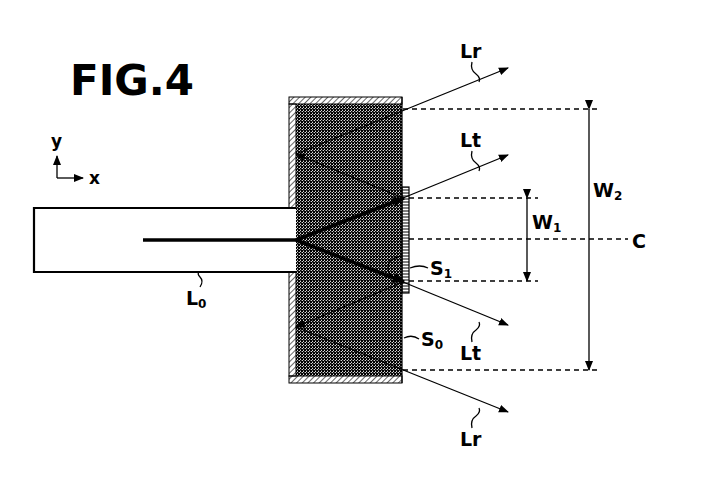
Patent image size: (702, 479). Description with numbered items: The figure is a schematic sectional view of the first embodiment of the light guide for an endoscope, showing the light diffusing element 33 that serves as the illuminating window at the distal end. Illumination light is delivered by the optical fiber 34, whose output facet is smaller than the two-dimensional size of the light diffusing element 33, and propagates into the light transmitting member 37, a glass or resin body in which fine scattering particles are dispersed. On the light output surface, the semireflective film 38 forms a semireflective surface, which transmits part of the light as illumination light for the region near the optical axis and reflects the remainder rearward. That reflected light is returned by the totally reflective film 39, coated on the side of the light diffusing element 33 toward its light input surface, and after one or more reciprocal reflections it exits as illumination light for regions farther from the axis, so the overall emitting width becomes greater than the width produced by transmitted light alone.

The light diffusing element 33 is at (316, 389).
The optical fiber 34 is at (77, 272).
The light transmitting member 37 is at (305, 358).
The semireflective film 38 is at (407, 188).
The totally reflective film 39 is at (289, 112).